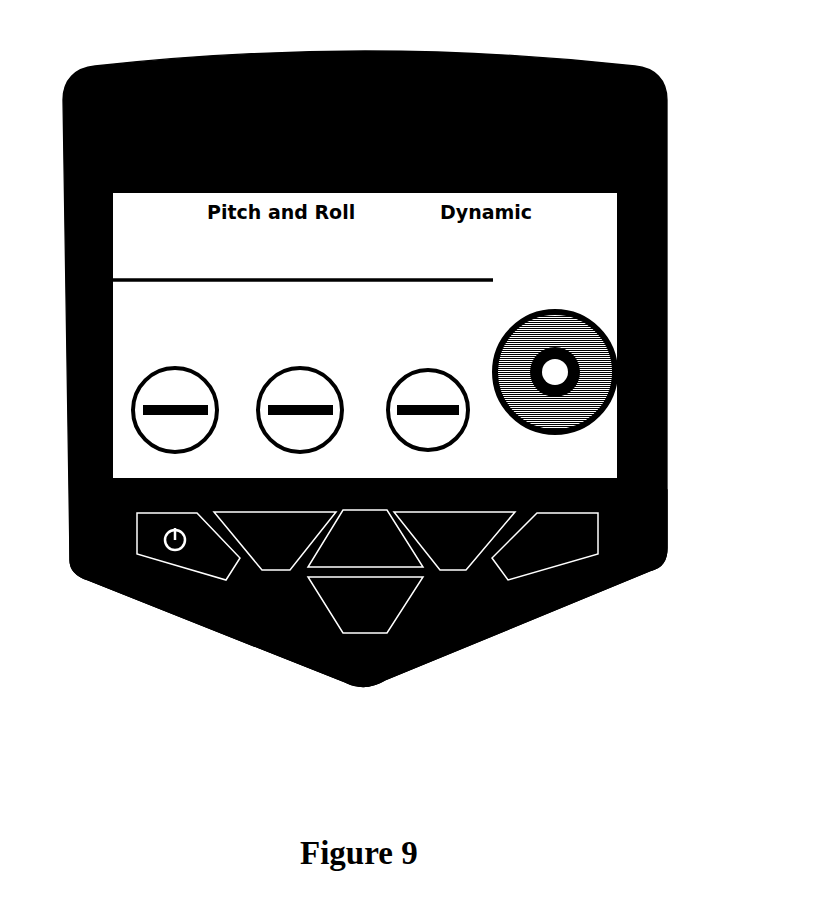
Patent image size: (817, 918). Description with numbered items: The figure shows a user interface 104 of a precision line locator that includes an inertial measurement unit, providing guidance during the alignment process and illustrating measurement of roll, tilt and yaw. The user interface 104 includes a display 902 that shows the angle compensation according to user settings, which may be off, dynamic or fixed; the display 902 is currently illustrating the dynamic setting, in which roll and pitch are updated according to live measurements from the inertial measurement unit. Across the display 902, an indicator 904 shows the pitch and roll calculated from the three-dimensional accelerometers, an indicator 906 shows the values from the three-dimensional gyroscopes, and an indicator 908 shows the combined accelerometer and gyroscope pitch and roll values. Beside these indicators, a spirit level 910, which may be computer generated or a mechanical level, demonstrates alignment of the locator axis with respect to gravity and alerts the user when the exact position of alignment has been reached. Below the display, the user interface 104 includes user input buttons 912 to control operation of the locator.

The user interface 104 is at (668, 183).
The display 902 is at (303, 262).
The indicator 904 is at (172, 370).
The indicator 906 is at (292, 380).
The indicator 908 is at (413, 387).
The spirit level 910 is at (493, 370).
The user input buttons 912 is at (525, 660).